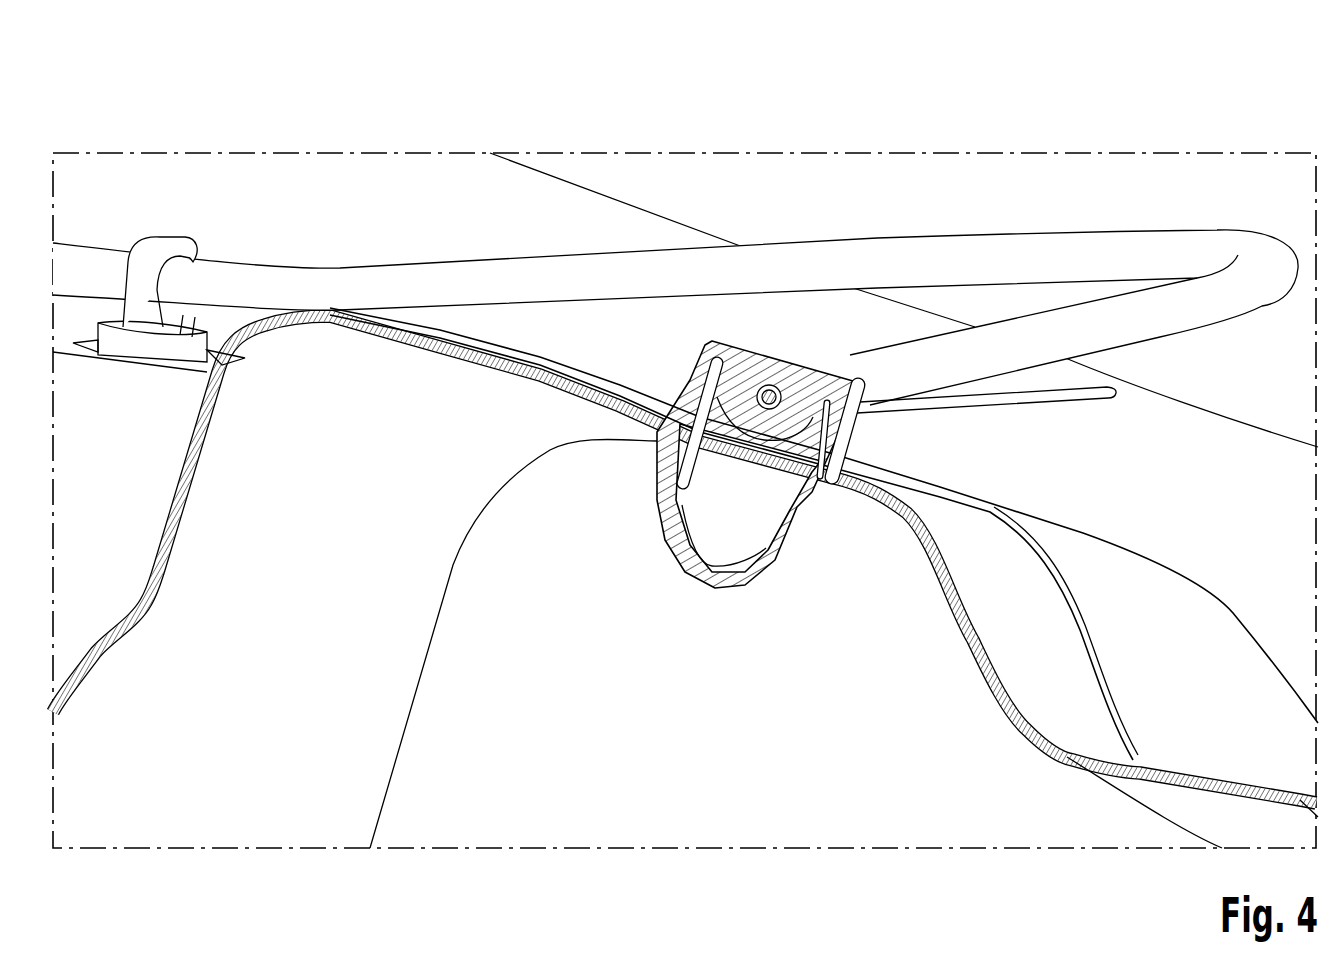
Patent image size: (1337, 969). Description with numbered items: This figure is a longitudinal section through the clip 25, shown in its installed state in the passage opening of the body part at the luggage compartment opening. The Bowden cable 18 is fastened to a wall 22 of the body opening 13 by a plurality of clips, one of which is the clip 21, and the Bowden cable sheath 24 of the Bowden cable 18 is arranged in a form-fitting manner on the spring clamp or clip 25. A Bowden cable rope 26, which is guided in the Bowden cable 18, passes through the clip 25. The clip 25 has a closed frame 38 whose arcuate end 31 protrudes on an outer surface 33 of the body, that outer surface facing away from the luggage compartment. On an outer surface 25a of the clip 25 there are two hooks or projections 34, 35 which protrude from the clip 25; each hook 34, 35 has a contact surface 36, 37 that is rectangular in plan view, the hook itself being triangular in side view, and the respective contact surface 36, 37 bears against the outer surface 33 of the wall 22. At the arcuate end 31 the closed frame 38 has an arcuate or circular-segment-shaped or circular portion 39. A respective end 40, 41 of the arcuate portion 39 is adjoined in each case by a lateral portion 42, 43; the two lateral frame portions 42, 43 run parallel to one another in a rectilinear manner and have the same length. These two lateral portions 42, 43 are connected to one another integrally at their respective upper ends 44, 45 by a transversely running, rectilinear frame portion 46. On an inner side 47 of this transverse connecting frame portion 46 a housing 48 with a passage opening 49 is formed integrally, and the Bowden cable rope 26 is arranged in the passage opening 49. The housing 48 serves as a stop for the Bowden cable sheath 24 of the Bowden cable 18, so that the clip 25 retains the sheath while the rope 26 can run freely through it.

The body opening 13 is at (157, 453).
The Bowden cable 18 is at (675, 242).
The clip 21 is at (150, 240).
The wall 22 is at (685, 500).
The Bowden cable sheath 24 is at (430, 280).
The clip 25 is at (513, 643).
The outer surface 25a is at (657, 514).
The Bowden cable rope 26 is at (770, 395).
The arcuate end 31 is at (824, 391).
The outer surface 33 is at (685, 500).
The hook 34 is at (824, 391).
The hook 35 is at (982, 436).
The contact surface 36 is at (824, 391).
The contact surface 37 is at (848, 463).
The closed frame 38 is at (824, 391).
The arcuate portion 39 is at (824, 391).
The end of the arcuate portion 40 is at (824, 391).
The end of the arcuate portion 41 is at (824, 391).
The lateral portion 42 is at (824, 391).
The lateral portion 43 is at (824, 391).
The upper end 44 is at (824, 391).
The upper end 45 is at (824, 391).
The transversely running frame portion 46 is at (824, 391).
The inner side 47 is at (824, 391).
The housing 48 is at (760, 244).
The passage opening 49 is at (760, 244).